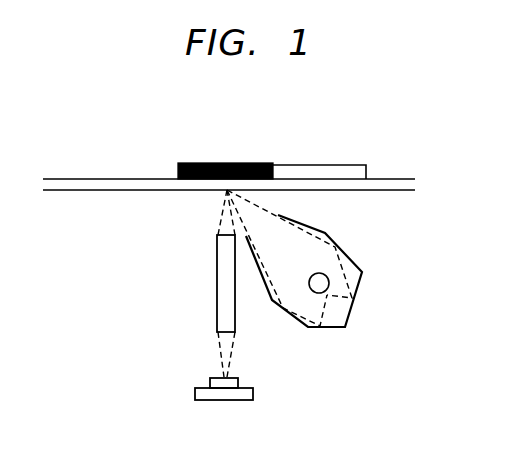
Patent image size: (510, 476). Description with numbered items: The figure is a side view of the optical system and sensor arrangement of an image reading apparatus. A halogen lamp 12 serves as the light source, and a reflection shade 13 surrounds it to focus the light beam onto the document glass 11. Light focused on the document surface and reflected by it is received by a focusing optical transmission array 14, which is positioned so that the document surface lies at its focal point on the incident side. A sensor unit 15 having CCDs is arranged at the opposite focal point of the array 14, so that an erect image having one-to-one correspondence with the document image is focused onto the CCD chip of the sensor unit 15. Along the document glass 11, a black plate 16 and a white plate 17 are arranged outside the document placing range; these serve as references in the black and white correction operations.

The document glass 11 is at (108, 178).
The halogen lamp 12 is at (322, 278).
The reflection shade 13 is at (353, 305).
The focusing optical transmission array 14 is at (218, 287).
The sensor unit 15 is at (242, 400).
The black plate 16 is at (224, 163).
The white plate 17 is at (322, 165).